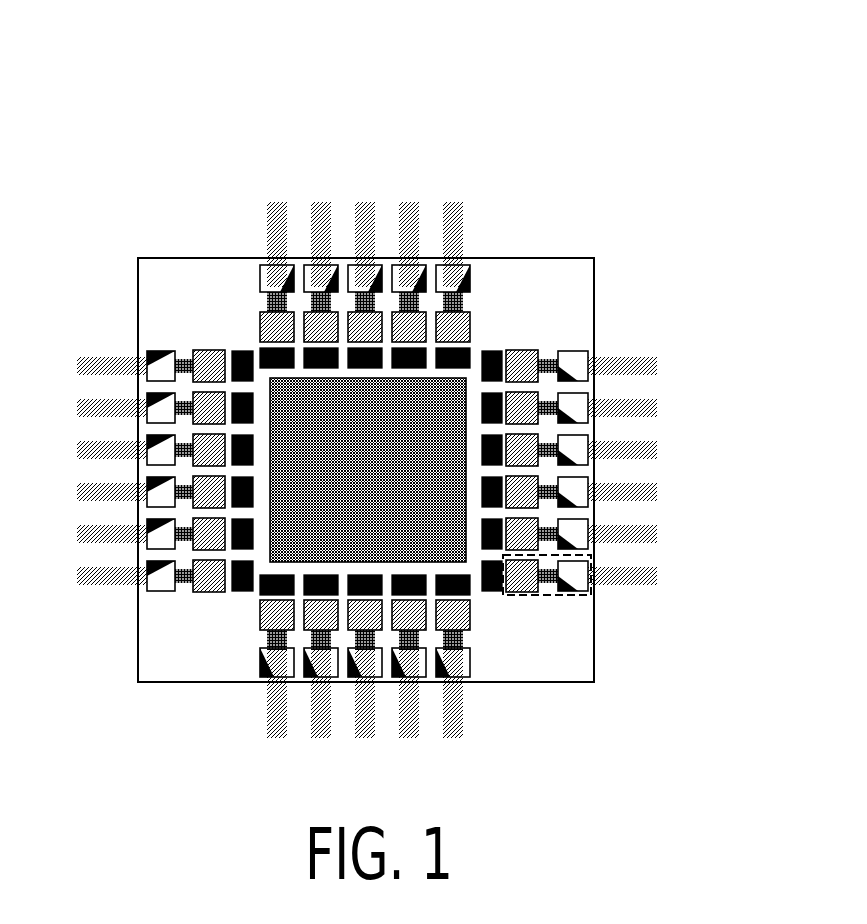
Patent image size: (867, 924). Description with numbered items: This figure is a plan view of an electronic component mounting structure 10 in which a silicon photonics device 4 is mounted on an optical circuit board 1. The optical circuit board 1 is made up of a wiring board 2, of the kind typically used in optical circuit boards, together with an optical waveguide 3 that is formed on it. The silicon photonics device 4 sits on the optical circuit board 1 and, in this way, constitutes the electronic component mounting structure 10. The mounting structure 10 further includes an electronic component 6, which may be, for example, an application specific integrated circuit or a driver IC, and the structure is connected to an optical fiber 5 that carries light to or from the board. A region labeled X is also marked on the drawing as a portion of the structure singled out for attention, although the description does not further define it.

The optical circuit board 1 is at (364, 395).
The wiring board 2 is at (198, 285).
The optical waveguide 3 is at (245, 282).
The silicon photonics device 4 is at (210, 372).
The optical fiber 5 is at (463, 698).
The electronic component 6 is at (497, 348).
The electronic component mounting structure 10 is at (385, 389).
The region X is at (550, 597).